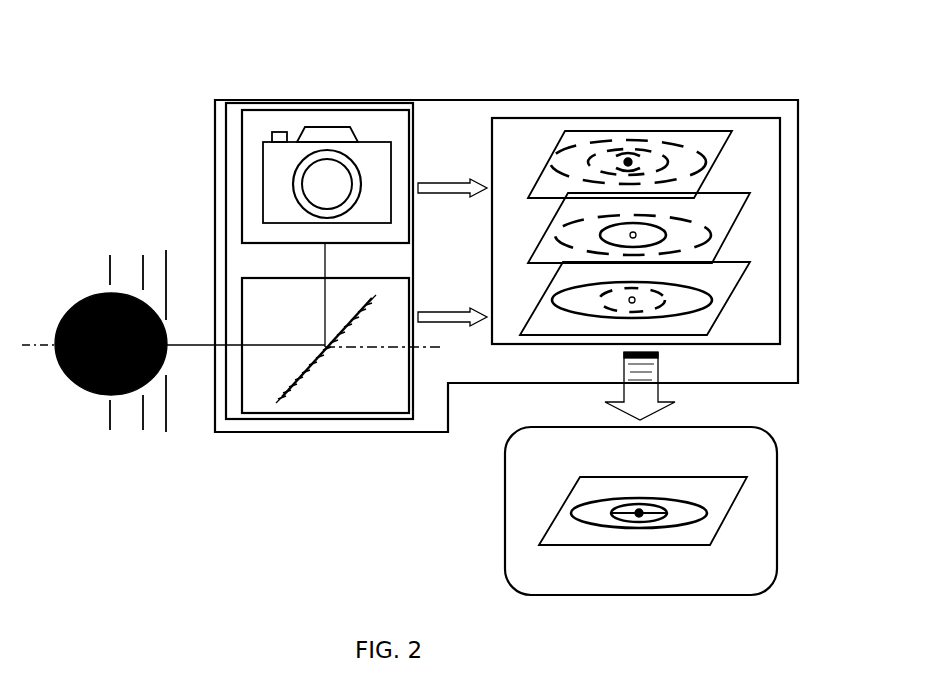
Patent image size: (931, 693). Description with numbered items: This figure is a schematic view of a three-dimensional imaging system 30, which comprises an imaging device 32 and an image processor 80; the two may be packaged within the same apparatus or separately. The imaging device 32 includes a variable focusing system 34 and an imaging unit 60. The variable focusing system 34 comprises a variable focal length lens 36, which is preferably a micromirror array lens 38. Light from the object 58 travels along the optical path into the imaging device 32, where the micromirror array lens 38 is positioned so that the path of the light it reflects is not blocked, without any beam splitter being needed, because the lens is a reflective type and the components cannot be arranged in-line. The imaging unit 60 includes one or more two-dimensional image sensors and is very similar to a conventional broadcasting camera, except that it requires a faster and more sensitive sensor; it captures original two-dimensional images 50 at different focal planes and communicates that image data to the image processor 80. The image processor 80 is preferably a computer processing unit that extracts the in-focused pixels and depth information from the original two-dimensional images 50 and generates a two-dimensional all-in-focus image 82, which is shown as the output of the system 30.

The three-dimensional imaging system 30 is at (760, 393).
The imaging device 32 is at (218, 432).
The variable focusing system 34 is at (274, 413).
The variable focal length lens 36 is at (296, 392).
The micromirror array lens 38 is at (317, 370).
The original two-dimensional images 50 is at (537, 295).
The object 58 is at (73, 405).
The imaging unit 60 is at (235, 142).
The image processor 80 is at (703, 117).
The two-dimensional all-in-focus image 82 is at (547, 523).